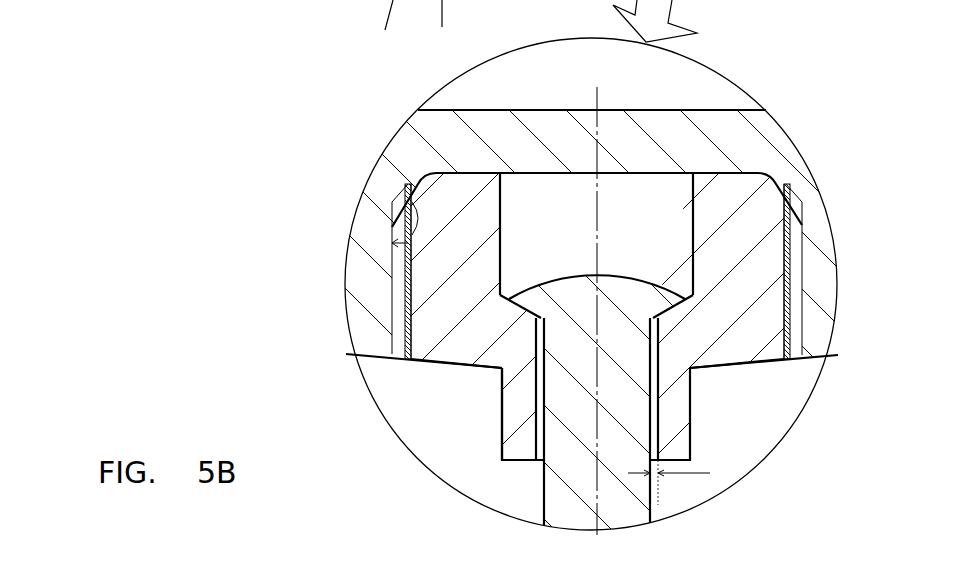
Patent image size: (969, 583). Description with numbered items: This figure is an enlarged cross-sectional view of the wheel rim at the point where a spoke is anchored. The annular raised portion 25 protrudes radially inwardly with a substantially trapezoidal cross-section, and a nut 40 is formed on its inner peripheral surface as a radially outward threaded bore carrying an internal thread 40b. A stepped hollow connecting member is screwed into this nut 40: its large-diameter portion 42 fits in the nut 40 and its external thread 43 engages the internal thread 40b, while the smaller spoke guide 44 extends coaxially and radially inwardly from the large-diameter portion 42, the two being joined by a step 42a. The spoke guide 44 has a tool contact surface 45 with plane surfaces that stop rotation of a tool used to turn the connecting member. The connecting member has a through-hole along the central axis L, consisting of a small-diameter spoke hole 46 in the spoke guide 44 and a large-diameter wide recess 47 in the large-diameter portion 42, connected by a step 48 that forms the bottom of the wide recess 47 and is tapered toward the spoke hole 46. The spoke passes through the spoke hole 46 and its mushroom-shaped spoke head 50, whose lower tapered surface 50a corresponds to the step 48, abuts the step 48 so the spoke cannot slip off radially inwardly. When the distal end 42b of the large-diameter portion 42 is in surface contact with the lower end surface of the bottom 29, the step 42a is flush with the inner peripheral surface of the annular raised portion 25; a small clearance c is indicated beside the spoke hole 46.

The annular raised portion 25 is at (357, 230).
The bottom 29 is at (550, 118).
The nut 40 is at (532, 229).
The internal thread 40b is at (425, 281).
The large-diameter portion 42 is at (553, 311).
The step 42a is at (458, 367).
The distal end 42b is at (460, 168).
The external thread 43 is at (398, 300).
The spoke guide 44 is at (502, 460).
The tool contact surface 45 is at (502, 428).
The spoke hole 46 is at (555, 492).
The wide recess 47 is at (558, 213).
The step 48 is at (597, 375).
The spoke head 50 is at (607, 277).
The tapered surface 50a is at (662, 313).
The central axis L is at (597, 299).
The clearance c is at (676, 474).